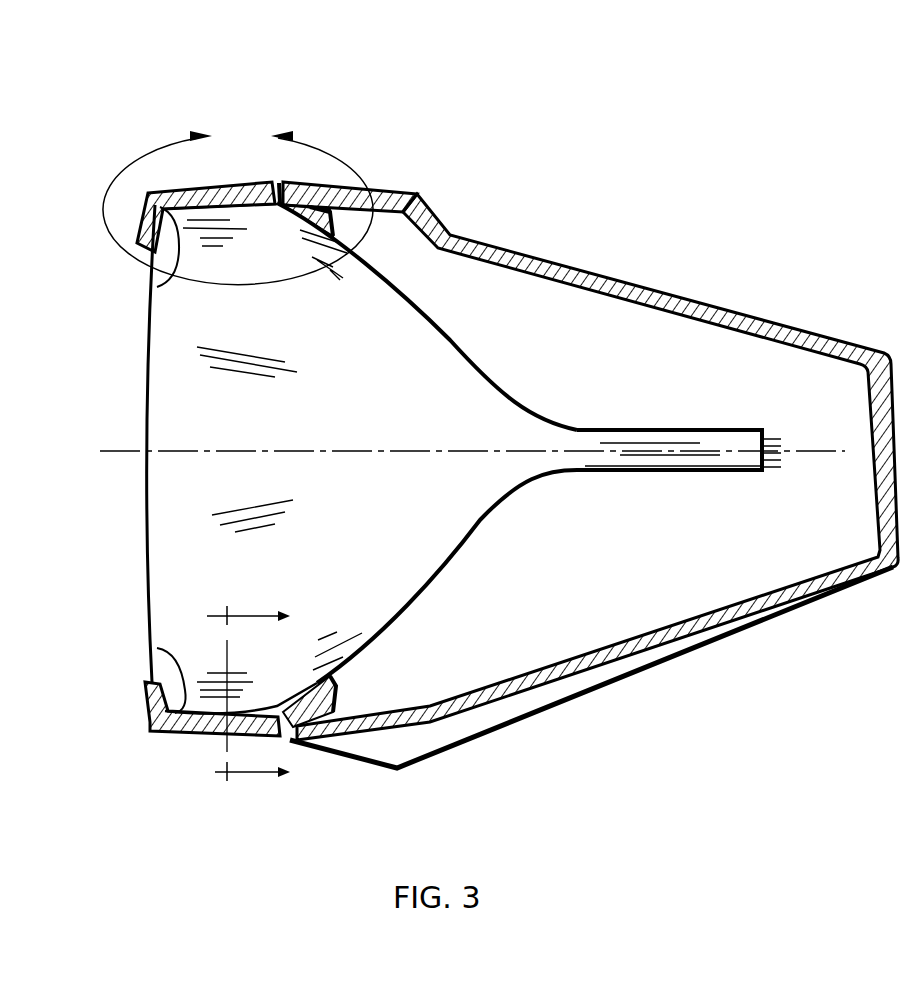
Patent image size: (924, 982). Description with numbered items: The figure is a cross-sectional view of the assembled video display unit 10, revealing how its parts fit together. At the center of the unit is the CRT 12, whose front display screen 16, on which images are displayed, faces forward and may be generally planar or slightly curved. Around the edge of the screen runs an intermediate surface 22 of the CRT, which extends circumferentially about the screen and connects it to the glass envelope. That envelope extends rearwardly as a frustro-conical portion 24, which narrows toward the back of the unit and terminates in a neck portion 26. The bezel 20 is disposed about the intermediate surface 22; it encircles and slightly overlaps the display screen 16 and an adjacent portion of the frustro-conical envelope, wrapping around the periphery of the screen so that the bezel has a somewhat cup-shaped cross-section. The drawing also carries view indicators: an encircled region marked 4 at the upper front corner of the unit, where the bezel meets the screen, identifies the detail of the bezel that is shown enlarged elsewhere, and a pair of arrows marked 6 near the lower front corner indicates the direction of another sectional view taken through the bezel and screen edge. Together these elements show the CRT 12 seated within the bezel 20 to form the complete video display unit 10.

The video display unit 10 is at (620, 103).
The CRT 12 is at (423, 373).
The front display screen 16 is at (146, 385).
The bezel 20 is at (177, 733).
The intermediate surface 22 is at (155, 290).
The frustro-conical portion 24 is at (420, 597).
The neck portion 26 is at (717, 435).
The section detail indicator 4 is at (238, 203).
The section line 6- 6 is at (237, 696).